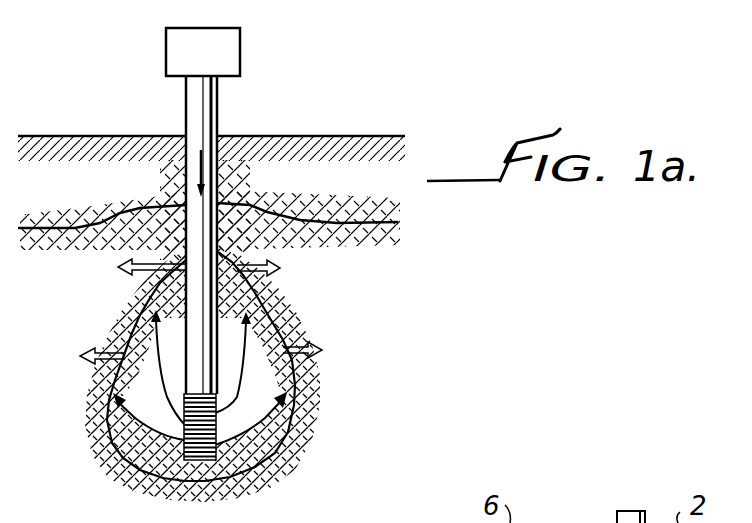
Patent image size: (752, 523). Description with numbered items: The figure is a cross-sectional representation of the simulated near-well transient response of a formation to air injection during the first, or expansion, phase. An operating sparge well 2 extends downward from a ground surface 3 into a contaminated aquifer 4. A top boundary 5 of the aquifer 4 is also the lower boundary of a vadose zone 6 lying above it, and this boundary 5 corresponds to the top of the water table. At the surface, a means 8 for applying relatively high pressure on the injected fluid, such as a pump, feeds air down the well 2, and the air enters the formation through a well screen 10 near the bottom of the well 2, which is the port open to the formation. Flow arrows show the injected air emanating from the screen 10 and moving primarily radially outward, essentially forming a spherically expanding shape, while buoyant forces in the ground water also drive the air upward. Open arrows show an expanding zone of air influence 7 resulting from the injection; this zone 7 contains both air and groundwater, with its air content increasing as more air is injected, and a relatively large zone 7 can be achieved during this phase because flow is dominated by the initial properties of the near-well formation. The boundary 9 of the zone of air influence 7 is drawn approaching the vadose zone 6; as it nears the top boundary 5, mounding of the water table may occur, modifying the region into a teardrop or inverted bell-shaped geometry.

The sparge well 2 is at (217, 160).
The ground surface 3 is at (323, 136).
The contaminated aquifer 4 is at (322, 237).
The top boundary of aquifer 5 is at (75, 230).
The vadose zone 6 is at (57, 153).
The zone of air influence 7 is at (123, 427).
The means for applying relatively high pressure 8 is at (165, 43).
The boundary of the air zone of influence 9 is at (130, 333).
The well screen 10 is at (217, 448).